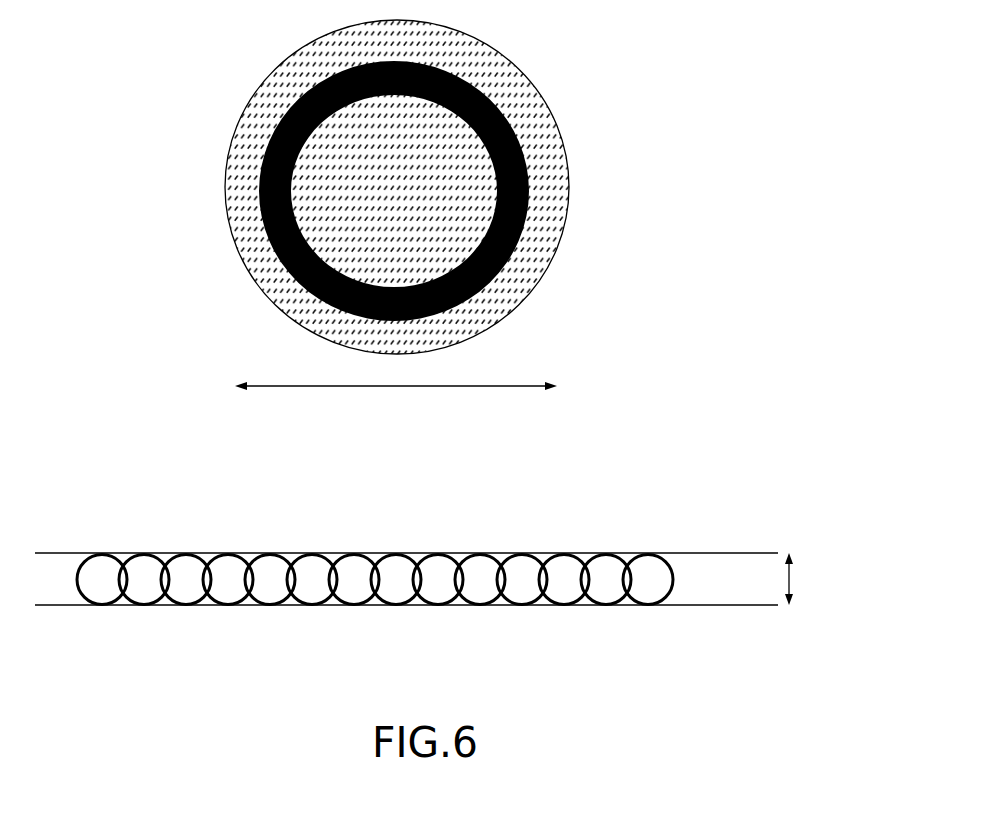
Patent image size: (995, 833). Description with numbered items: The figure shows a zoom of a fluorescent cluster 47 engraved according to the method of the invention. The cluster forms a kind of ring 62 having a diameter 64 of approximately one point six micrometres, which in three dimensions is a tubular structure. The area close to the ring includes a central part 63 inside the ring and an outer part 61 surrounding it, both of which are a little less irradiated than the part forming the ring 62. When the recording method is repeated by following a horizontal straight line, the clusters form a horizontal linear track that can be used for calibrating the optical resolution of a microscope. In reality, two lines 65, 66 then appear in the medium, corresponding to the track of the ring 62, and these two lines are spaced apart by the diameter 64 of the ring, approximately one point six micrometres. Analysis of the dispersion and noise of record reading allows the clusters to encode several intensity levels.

The cable cross-section 47 is at (352, 336).
The outer part 61 is at (228, 182).
The ring 62 is at (513, 113).
The central part 63 is at (417, 220).
The diameter 64 is at (402, 397).
The line 65 is at (713, 548).
The line 66 is at (700, 612).